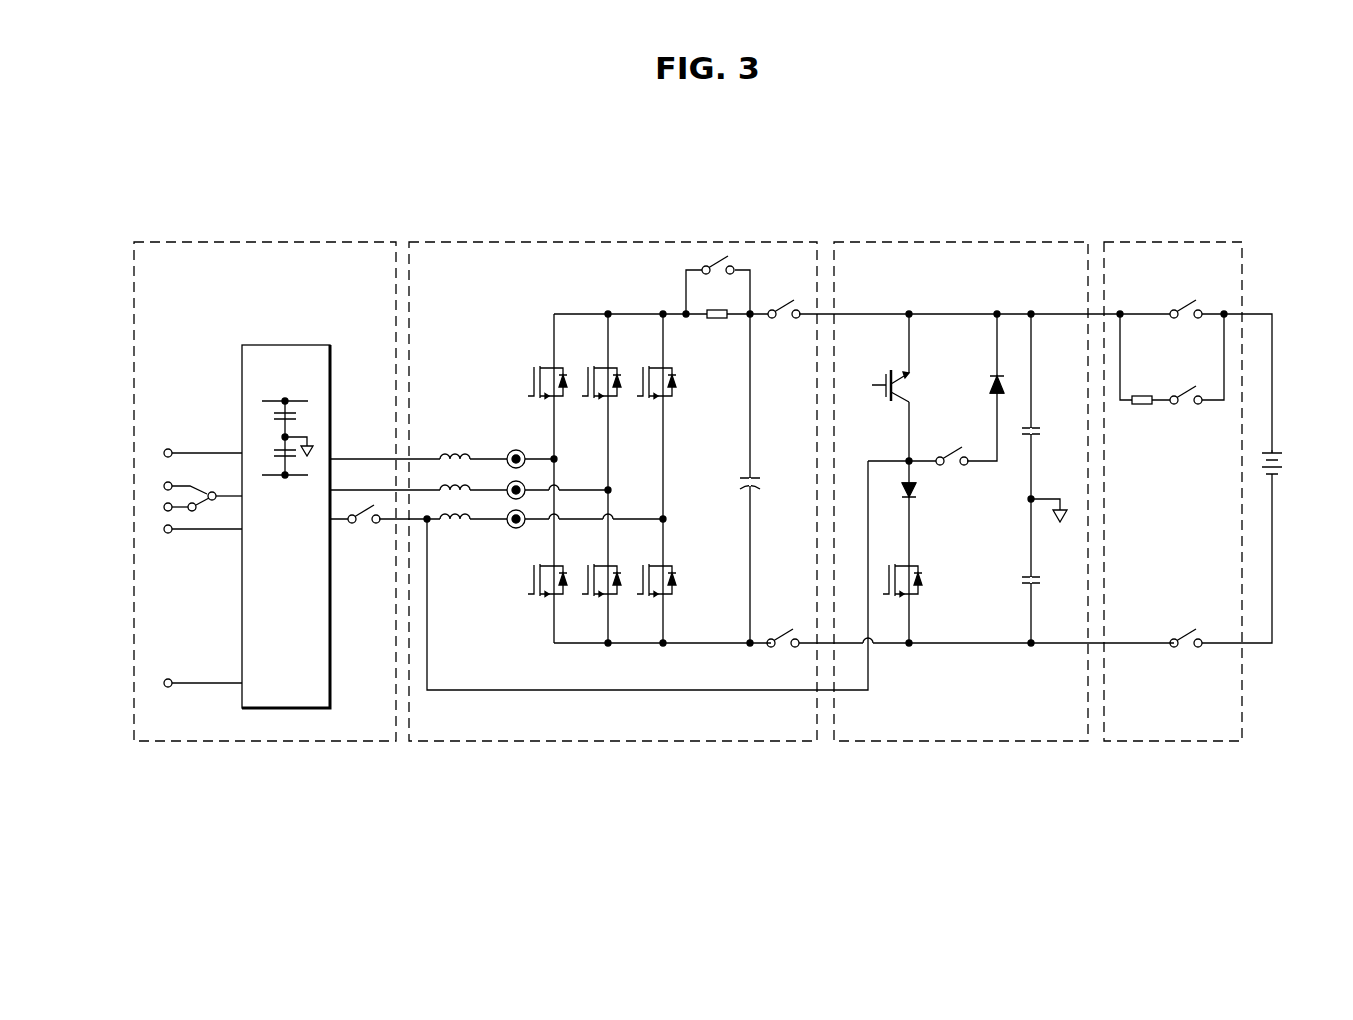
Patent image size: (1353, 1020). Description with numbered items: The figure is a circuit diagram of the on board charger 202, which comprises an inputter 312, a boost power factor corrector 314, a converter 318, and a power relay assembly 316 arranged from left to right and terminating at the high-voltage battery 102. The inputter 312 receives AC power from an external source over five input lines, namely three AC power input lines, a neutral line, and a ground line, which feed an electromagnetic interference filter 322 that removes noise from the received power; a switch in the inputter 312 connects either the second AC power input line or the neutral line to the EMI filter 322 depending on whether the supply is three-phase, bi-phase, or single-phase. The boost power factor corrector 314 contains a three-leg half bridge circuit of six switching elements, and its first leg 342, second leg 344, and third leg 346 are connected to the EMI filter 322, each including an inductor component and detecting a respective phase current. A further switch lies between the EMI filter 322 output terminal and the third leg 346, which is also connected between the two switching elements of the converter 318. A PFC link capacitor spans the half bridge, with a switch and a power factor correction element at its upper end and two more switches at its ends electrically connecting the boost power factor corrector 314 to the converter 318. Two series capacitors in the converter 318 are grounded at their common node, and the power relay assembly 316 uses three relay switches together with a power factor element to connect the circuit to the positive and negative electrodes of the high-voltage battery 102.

The on board charger (OBC) 202 is at (431, 176).
The inputter 312 is at (198, 742).
The electromagnetic interference (EMI) filter 322 is at (283, 709).
The boost power factor corrector 314 is at (619, 531).
The first leg 342 is at (574, 460).
The second leg 344 is at (628, 490).
The third leg 346 is at (683, 519).
The converter 318 is at (895, 742).
The power relay assembly 316 is at (1160, 742).
The high-voltage battery 102 is at (1281, 447).